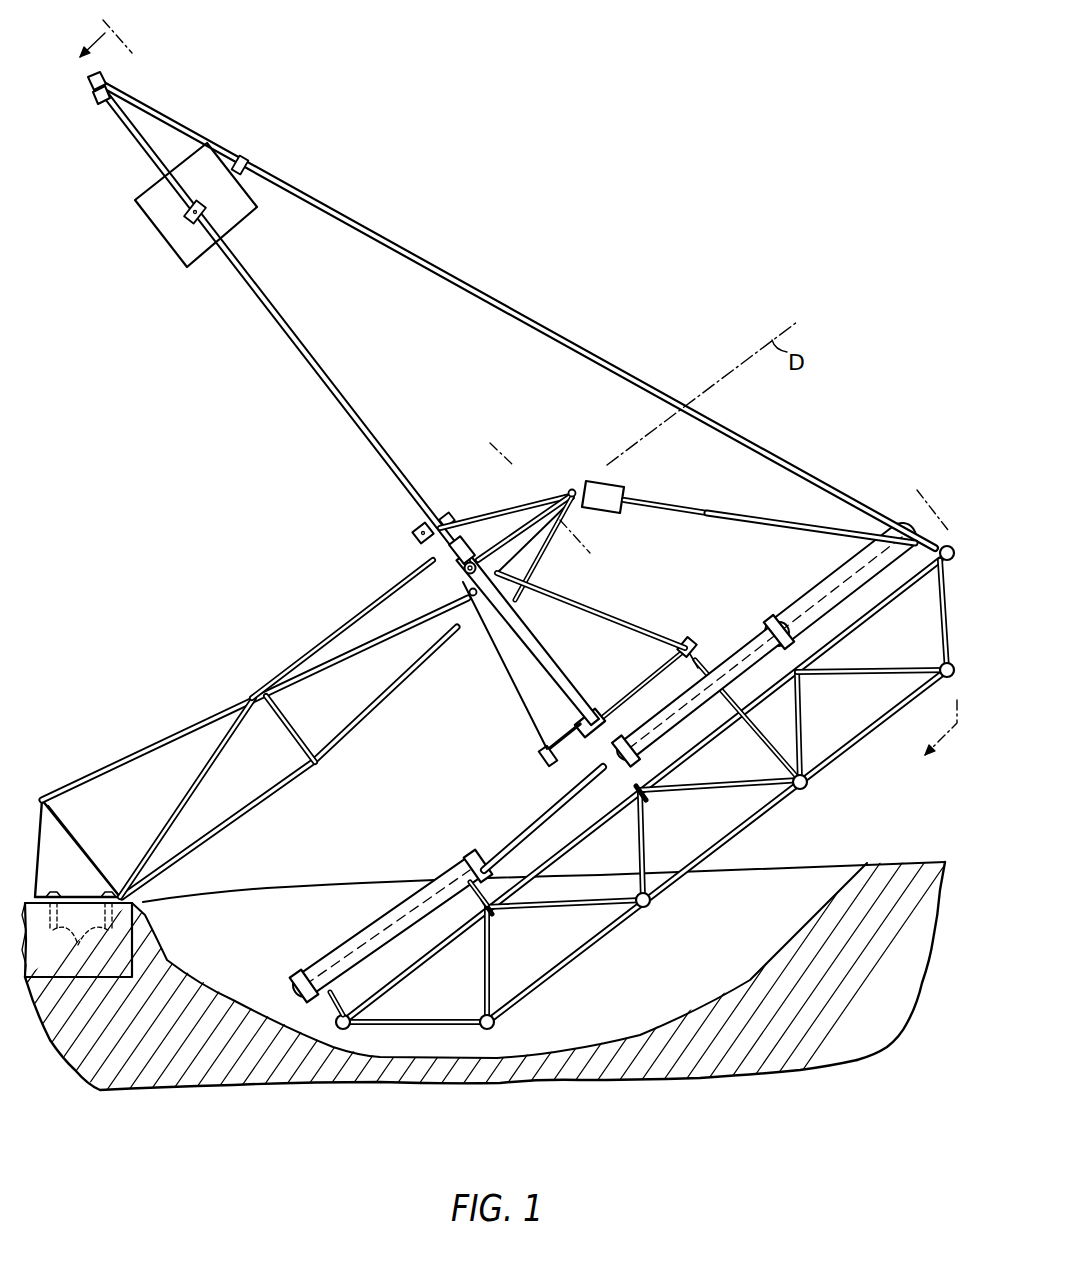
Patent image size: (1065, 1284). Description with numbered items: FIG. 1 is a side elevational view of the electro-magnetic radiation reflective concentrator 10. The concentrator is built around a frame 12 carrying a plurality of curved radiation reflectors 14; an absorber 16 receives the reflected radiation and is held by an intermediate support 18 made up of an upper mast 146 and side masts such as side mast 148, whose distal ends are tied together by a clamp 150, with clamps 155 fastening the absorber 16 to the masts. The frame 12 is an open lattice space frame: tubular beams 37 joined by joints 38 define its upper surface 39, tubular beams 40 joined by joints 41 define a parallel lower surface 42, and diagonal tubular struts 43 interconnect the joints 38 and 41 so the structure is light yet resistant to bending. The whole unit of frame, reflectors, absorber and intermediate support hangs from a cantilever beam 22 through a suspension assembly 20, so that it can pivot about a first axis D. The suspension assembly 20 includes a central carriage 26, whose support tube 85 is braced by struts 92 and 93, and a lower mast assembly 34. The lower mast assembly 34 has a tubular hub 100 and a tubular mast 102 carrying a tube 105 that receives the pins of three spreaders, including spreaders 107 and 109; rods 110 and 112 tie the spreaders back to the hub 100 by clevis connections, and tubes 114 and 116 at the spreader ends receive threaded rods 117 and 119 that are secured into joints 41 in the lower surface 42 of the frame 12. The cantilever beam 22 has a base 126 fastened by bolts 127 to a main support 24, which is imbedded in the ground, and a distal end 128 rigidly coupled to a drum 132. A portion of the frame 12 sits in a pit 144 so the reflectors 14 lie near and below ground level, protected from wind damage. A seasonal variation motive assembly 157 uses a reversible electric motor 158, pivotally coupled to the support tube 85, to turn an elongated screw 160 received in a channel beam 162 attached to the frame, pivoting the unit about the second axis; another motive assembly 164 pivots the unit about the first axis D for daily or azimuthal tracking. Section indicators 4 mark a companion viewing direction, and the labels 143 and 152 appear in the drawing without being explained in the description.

The section line 4 is at (518, 383).
The electro-magnetic radiation reflective concentrator 10 is at (565, 295).
The frame 12 is at (845, 760).
The curved radiation reflectors 14 is at (403, 880).
The absorber 16 is at (135, 228).
The intermediate support 18 is at (298, 325).
The suspension assembly 20 is at (478, 655).
The cantilever beam 22 is at (310, 640).
The main support 24 is at (140, 945).
The central carriage 26 is at (462, 522).
The first lower mast assembly 34 is at (585, 592).
The tubular beams 37 is at (400, 965).
The joints 38 is at (500, 910).
The upper surface 39 is at (332, 1035).
The tubular beams 40 is at (640, 910).
The joints 41 is at (800, 795).
The lower surface 42 is at (510, 1062).
The diagonal tubular struts 43 is at (575, 908).
The support tube 85 is at (552, 492).
The strut 92 is at (515, 520).
The strut 93 is at (535, 555).
The tubular hub 100 is at (450, 588).
The tubular mast 102 is at (530, 640).
The tube 105 is at (601, 723).
The spreader 107 is at (556, 748).
The spreader 109 is at (655, 690).
The rod 110 is at (513, 690).
The rod 112 is at (615, 630).
The tube 114 is at (540, 760).
The tube 116 is at (693, 640).
The rod 117 is at (645, 870).
The rod 119 is at (770, 745).
The base 126 is at (85, 895).
The bolts 127 is at (77, 940).
The distal end 128 is at (468, 610).
The drum 132 is at (432, 568).
The pit bottom 143 is at (180, 1085).
The pit 144 is at (695, 1010).
The upper mast 146 is at (380, 236).
The side mast 148 is at (292, 328).
The clamp 150 is at (112, 78).
The bracket 152 is at (445, 515).
The clamps 155 is at (245, 178).
The seasonal variation motive assembly 157 is at (570, 460).
The reversible electric motor 158 is at (618, 486).
The elongated screw 160 is at (672, 505).
The channel beam 162 is at (805, 540).
The motive assembly 164 is at (410, 528).